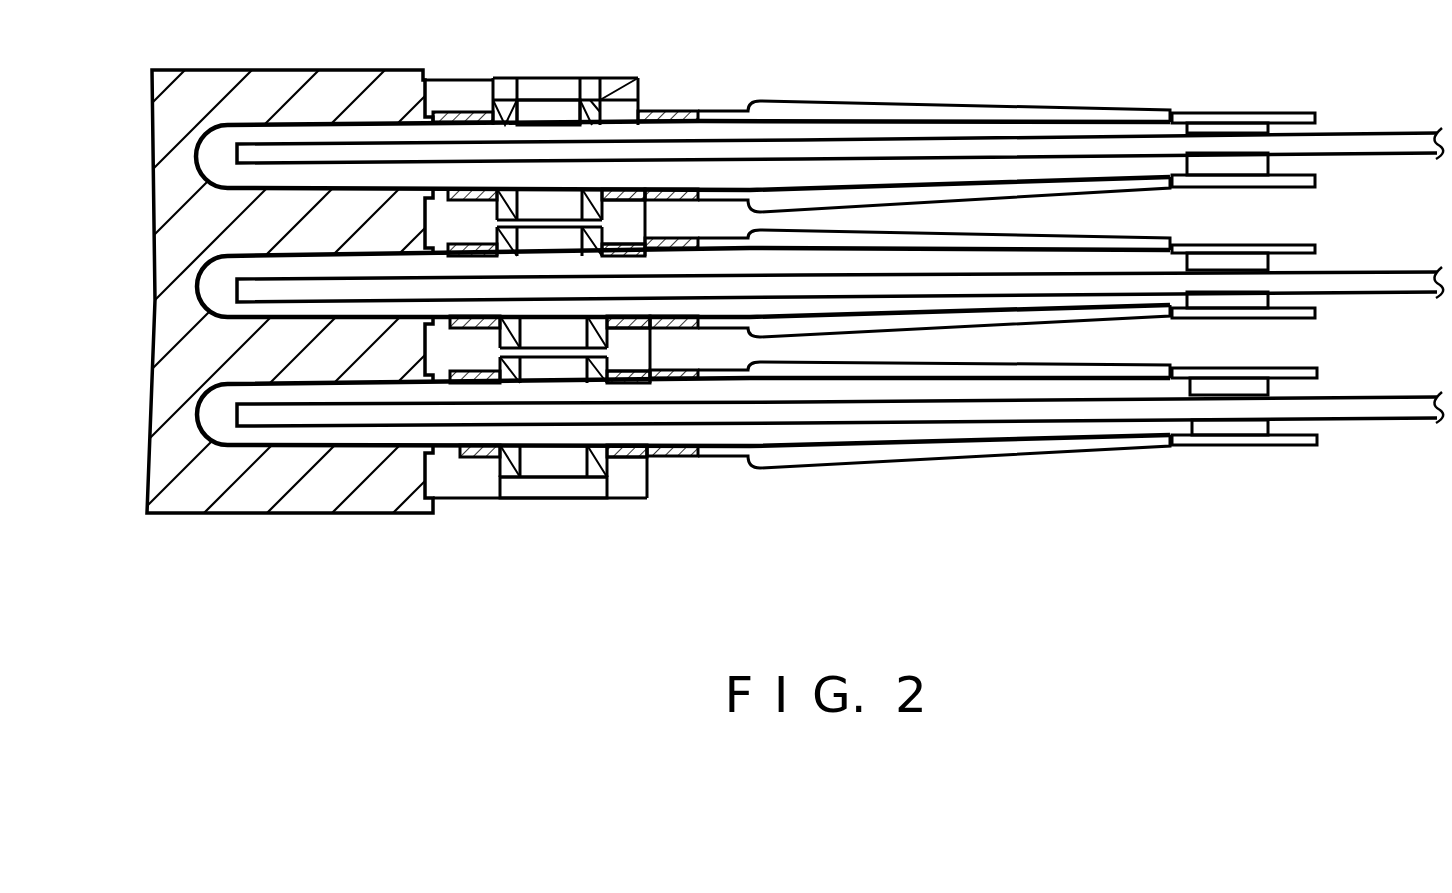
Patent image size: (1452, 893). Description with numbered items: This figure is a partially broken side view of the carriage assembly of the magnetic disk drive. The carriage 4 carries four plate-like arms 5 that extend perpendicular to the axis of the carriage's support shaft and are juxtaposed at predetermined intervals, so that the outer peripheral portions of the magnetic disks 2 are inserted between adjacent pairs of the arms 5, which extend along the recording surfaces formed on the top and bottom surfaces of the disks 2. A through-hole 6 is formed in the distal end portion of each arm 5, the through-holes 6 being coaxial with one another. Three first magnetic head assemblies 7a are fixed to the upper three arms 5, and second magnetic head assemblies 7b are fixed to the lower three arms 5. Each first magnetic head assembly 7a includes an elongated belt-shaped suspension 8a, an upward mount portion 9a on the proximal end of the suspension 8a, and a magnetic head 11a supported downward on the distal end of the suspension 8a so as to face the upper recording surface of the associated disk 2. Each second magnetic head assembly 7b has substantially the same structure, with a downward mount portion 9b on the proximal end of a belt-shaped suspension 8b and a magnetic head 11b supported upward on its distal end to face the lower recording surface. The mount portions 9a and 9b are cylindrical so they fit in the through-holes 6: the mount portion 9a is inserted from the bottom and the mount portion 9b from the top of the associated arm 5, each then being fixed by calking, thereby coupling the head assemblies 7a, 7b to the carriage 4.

The magnetic disk 2 is at (845, 140).
The carriage 4 is at (233, 508).
The arm 5 is at (438, 80).
The through-hole 6 is at (598, 98).
The first magnetic head assembly 7a is at (1320, 115).
The second magnetic head assembly 7b is at (1324, 181).
The suspension 8a is at (688, 109).
The suspension 8b is at (662, 201).
The upward mount portion 9a is at (520, 98).
The downward mount portion 9b is at (525, 210).
The magnetic head 11a is at (1228, 122).
The magnetic head 11b is at (1243, 177).